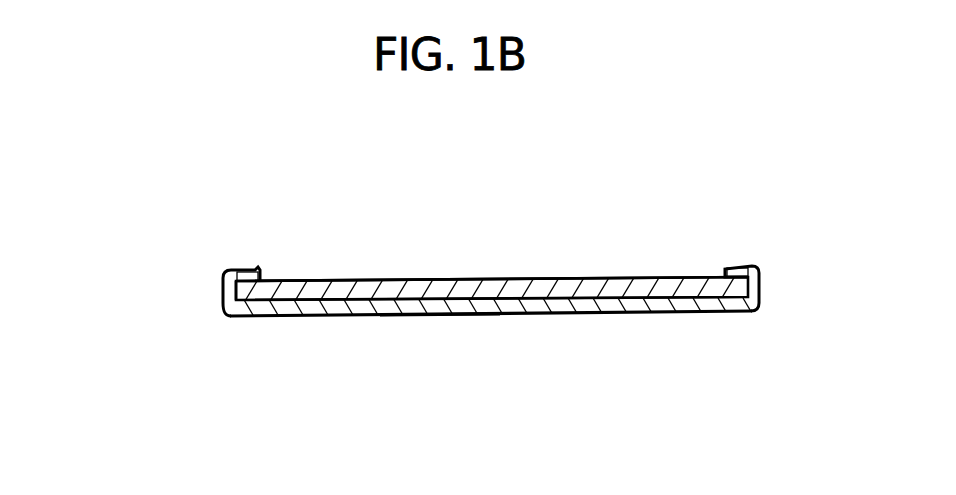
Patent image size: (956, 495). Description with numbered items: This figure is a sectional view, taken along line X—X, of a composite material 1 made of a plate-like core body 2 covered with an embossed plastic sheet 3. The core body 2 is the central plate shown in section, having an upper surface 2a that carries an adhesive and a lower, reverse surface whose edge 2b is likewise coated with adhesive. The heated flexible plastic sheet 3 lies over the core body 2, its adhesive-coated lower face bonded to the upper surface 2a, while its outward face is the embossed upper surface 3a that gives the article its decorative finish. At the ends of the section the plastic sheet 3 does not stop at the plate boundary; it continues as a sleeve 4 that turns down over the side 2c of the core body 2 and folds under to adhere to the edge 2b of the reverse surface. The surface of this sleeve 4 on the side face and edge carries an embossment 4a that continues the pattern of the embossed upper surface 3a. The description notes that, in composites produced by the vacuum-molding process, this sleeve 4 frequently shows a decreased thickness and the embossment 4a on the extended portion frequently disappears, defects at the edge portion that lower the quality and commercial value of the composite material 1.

The composite material 1 is at (246, 352).
The core body 2 is at (627, 288).
The upper surface of core body 2a is at (475, 298).
The edge of reverse surface of core body 2b is at (348, 282).
The side of core body 2c is at (230, 300).
The plastic sheet 3 is at (545, 303).
The embossed upper surface of plastic sheet 3a is at (435, 312).
The sleeve 4 is at (251, 272).
The embossment 4a is at (237, 272).